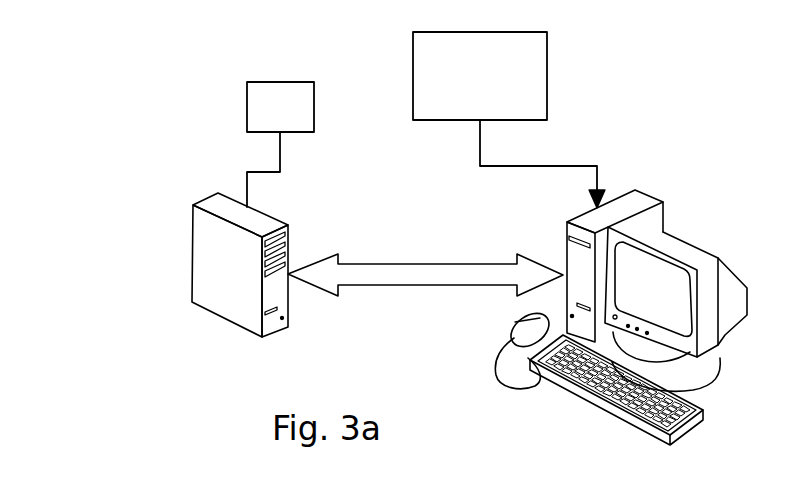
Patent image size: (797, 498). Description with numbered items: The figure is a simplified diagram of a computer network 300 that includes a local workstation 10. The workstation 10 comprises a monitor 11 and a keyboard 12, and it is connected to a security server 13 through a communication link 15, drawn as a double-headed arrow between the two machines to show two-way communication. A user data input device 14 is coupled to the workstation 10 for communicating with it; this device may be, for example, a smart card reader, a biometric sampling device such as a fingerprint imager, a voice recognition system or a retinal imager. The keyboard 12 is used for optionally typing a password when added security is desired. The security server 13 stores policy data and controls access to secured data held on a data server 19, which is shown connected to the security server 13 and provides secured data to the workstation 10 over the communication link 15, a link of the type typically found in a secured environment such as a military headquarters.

The computer network 300 is at (108, 110).
The data server 19 is at (265, 82).
The security server 13 is at (192, 255).
The communication link 15 is at (417, 263).
The user data input device 14 is at (547, 60).
The workstation 10 is at (650, 197).
The monitor 11 is at (700, 250).
The keyboard 12 is at (582, 398).